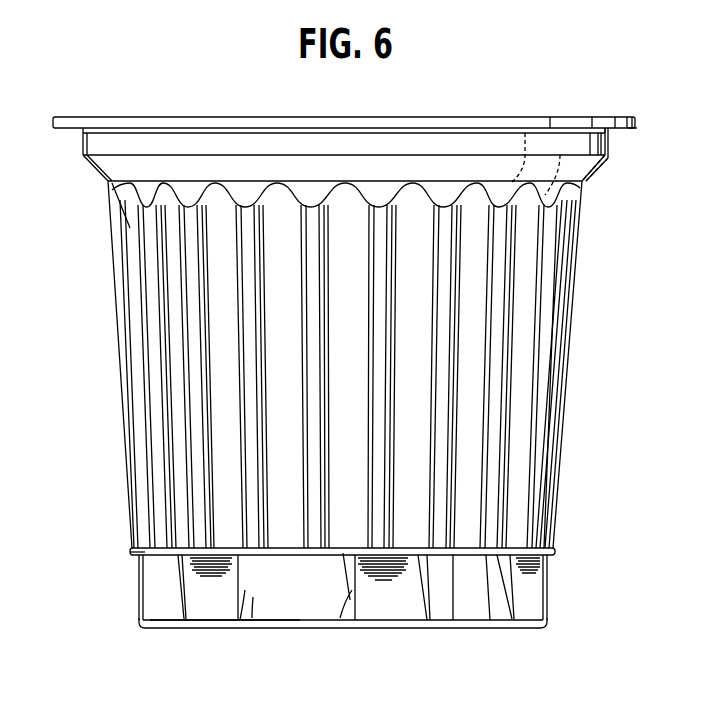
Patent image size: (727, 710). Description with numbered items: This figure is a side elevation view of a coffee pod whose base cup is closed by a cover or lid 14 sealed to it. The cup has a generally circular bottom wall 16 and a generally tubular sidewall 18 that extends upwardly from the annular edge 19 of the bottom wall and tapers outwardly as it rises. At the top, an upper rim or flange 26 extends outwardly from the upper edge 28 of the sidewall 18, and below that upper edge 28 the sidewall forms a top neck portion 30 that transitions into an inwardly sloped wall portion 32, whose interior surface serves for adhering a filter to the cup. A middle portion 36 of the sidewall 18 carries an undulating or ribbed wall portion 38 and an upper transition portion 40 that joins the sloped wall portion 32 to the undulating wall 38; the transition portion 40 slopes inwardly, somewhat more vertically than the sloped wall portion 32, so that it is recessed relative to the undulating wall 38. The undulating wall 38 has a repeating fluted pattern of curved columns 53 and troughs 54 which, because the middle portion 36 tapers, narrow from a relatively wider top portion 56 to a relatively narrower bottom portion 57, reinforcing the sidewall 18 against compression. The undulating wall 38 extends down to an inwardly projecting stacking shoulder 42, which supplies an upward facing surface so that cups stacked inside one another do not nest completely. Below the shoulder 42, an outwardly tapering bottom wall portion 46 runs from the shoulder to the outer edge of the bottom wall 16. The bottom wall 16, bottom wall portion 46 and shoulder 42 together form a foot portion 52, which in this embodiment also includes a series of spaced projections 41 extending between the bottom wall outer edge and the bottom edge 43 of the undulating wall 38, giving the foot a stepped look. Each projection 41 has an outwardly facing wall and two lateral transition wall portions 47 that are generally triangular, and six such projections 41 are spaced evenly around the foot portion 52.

The lid 14 is at (584, 118).
The bottom wall 16 is at (460, 632).
The sidewall 18 is at (572, 372).
The edge 19 is at (140, 633).
The flange 26 is at (622, 133).
The upper edge 28 is at (82, 132).
The neck portion 30 is at (608, 148).
The inwardly sloped wall portion 32 is at (90, 168).
The middle portion 36 is at (117, 327).
The undulating wall portion 38 is at (120, 357).
The upper transition portion 40 is at (562, 208).
The projections 41 is at (211, 605).
The stacking shoulder 42 is at (550, 559).
The bottom edge 43 is at (130, 556).
The bottom wall portion 46 is at (138, 575).
The lateral transition wall portions 47 is at (249, 600).
The foot portion 52 is at (548, 604).
The columns 53 is at (513, 440).
The troughs 54 is at (530, 500).
The top portion 56 is at (122, 233).
The bottom portion 57 is at (205, 517).